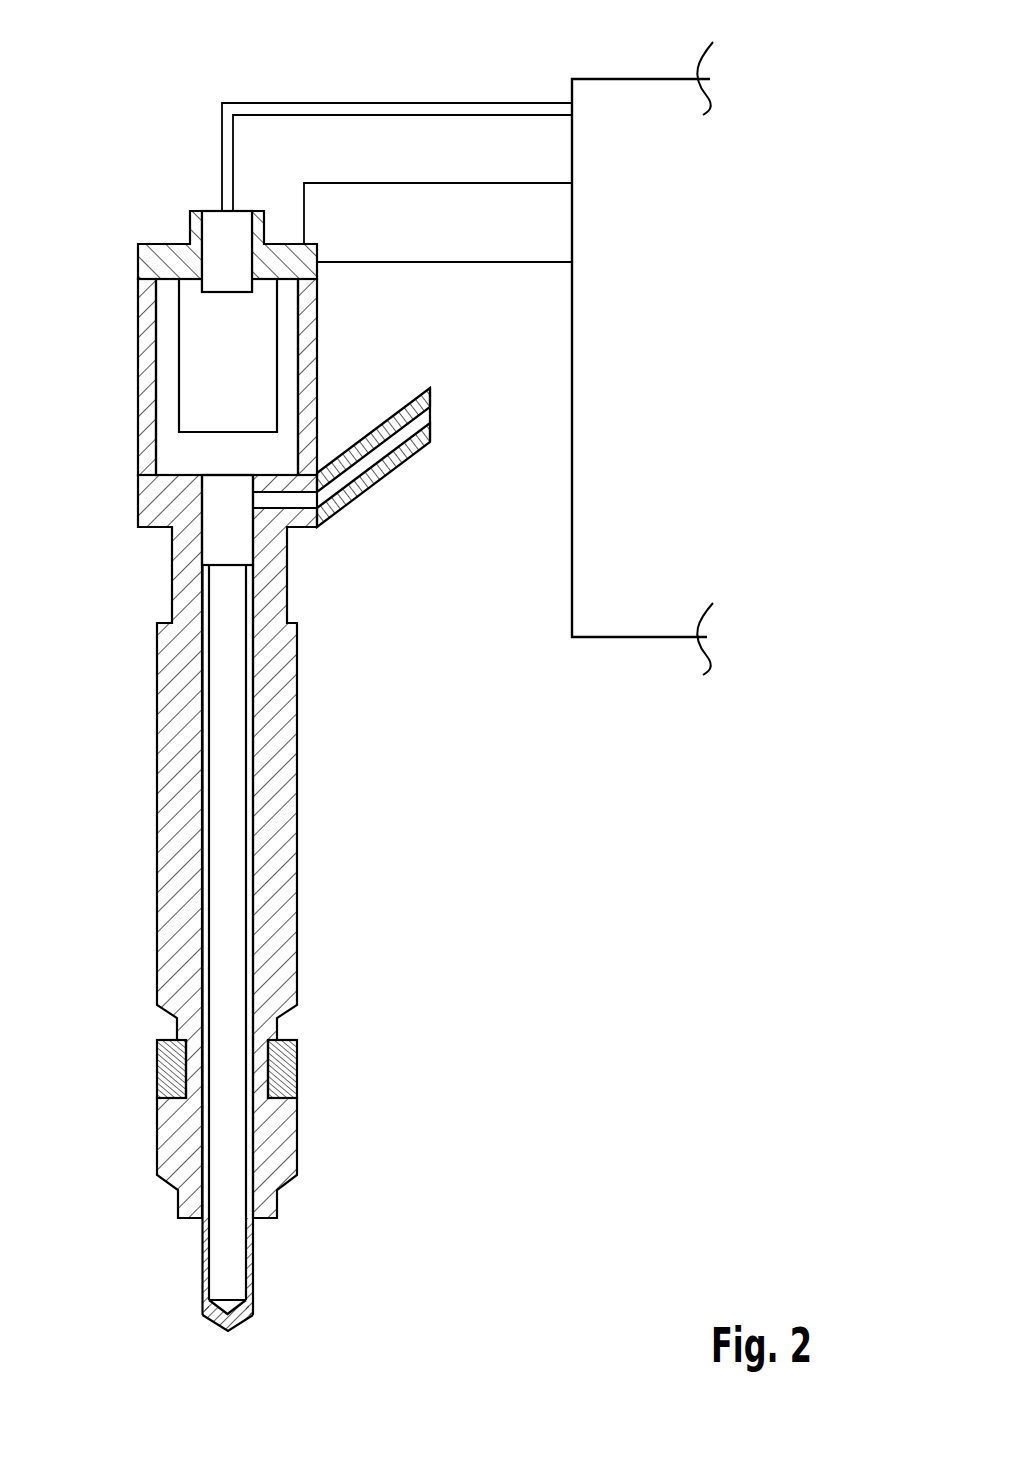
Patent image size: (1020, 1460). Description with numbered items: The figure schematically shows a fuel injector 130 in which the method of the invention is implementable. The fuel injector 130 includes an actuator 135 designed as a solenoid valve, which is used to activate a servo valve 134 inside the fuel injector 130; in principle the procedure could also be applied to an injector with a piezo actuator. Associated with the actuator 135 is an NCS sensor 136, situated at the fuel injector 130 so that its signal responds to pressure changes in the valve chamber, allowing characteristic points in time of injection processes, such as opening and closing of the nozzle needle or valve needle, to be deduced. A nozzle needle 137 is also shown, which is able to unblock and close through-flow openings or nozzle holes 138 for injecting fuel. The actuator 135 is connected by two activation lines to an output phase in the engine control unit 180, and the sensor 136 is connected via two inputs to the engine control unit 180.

The fuel injector 130 is at (158, 226).
The servo valve 134 is at (212, 545).
The actuator 135 is at (212, 375).
The NCS sensor 136 is at (213, 260).
The nozzle needle 137 is at (223, 1272).
The nozzle holes 138 is at (213, 1318).
The engine control unit 180 is at (638, 115).